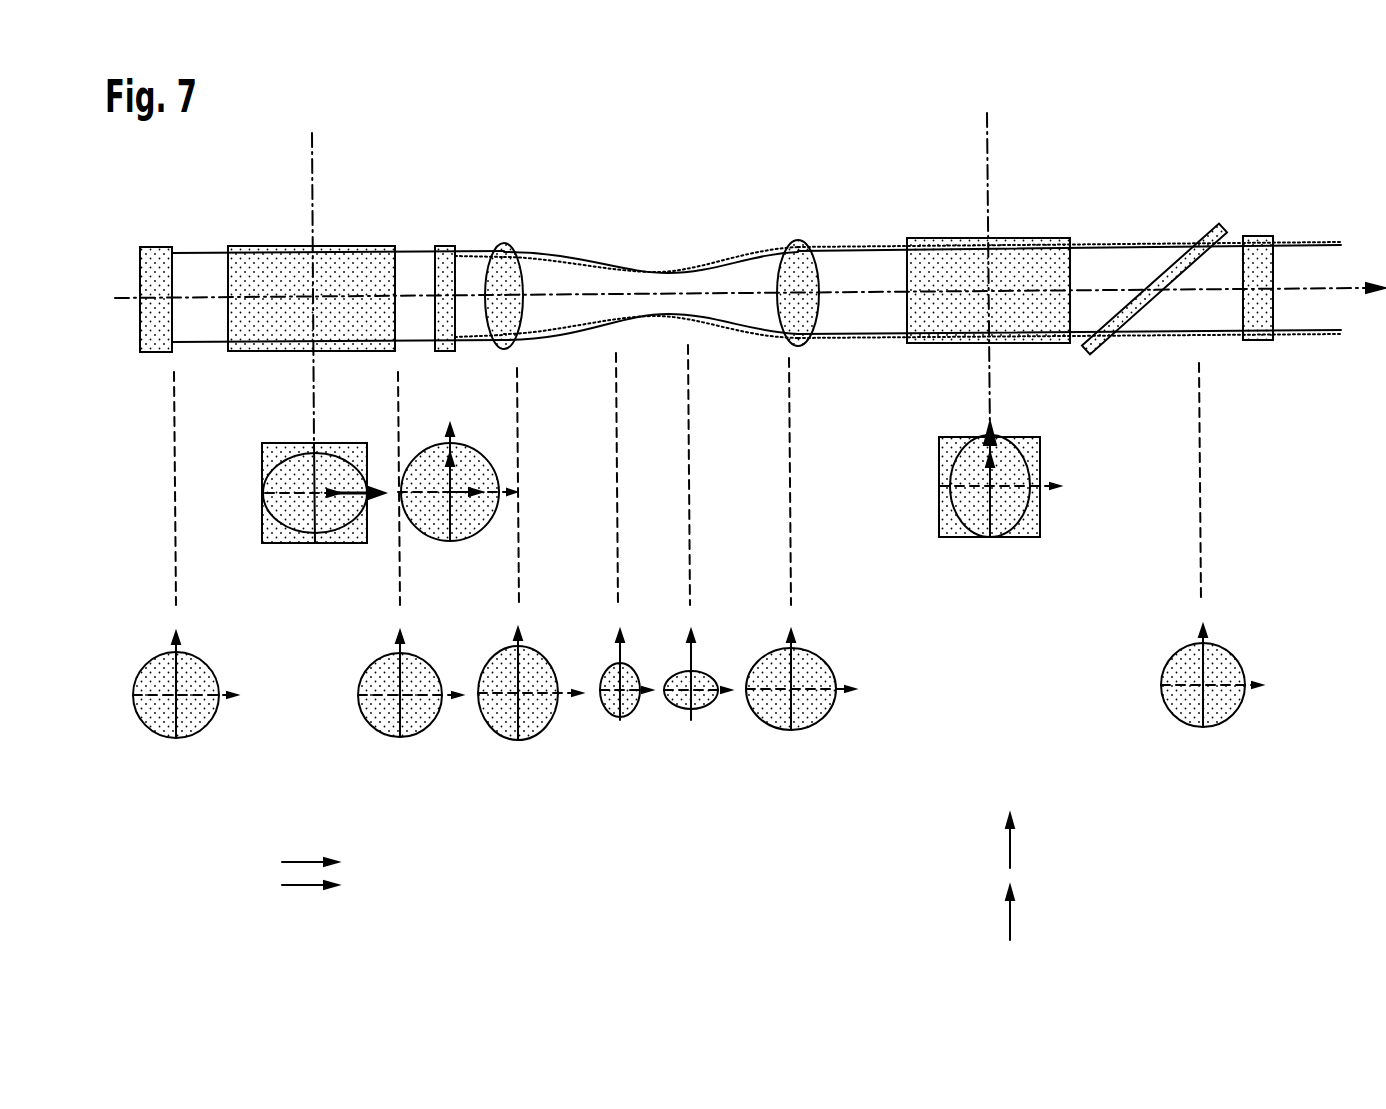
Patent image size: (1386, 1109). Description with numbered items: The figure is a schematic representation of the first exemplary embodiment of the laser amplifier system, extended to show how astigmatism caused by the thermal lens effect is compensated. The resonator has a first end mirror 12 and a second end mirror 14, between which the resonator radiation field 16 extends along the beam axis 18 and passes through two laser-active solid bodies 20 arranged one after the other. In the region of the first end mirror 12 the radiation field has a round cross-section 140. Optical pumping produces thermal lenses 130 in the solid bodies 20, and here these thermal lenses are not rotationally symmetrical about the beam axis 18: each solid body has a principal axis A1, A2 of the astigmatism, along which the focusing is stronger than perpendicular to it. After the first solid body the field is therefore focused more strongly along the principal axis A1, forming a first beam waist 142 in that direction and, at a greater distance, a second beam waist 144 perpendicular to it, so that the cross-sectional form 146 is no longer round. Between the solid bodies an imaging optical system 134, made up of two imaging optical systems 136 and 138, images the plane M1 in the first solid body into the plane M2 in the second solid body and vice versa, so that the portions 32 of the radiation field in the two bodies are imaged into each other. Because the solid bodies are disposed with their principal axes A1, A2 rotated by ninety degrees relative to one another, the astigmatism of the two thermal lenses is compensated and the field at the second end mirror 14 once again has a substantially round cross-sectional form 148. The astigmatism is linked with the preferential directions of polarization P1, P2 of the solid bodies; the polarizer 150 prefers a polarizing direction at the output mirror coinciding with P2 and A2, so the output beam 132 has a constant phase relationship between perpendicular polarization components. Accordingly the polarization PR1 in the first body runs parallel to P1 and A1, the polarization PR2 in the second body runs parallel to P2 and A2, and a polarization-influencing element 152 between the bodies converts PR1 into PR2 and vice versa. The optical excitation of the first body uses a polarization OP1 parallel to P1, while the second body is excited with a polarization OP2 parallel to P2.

The first end mirror 12 is at (157, 258).
The second end mirror 14 is at (1257, 252).
The resonator radiation field 16 is at (546, 241).
The beam axis 18 is at (372, 297).
The solid body 20 is at (341, 246).
The portion of the resonator radiation field 32 is at (244, 256).
The thermal lens 130 is at (283, 533).
The output beam 132 is at (1313, 318).
The imaging optical system 134 is at (726, 241).
The imaging optical system 136 is at (505, 323).
The imaging optical system 138 is at (793, 322).
The round cross-section 140 is at (175, 725).
The first beam waist 142 is at (618, 700).
The second beam waist 144 is at (690, 700).
The cross-sectional form 146 is at (398, 725).
The round cross-sectional form 148 is at (1202, 718).
The polarizer 150 is at (1200, 233).
The polarization-influencing element 152 is at (446, 258).
The plane M1 is at (306, 143).
The plane M2 is at (984, 137).
The polarization of the resonator radiation field PR1 is at (336, 489).
The polarization of the resonator radiation field PR2 is at (455, 459).
The principal axis of the astigmatism A1 is at (383, 497).
The principal axis of the astigmatism A2 is at (993, 426).
The polarization of the optical excitation OP1 is at (303, 860).
The polarization of the optical excitation OP2 is at (1012, 848).
The preferential direction of the polarization P1 is at (303, 888).
The preferential direction of the polarization P2 is at (1012, 920).